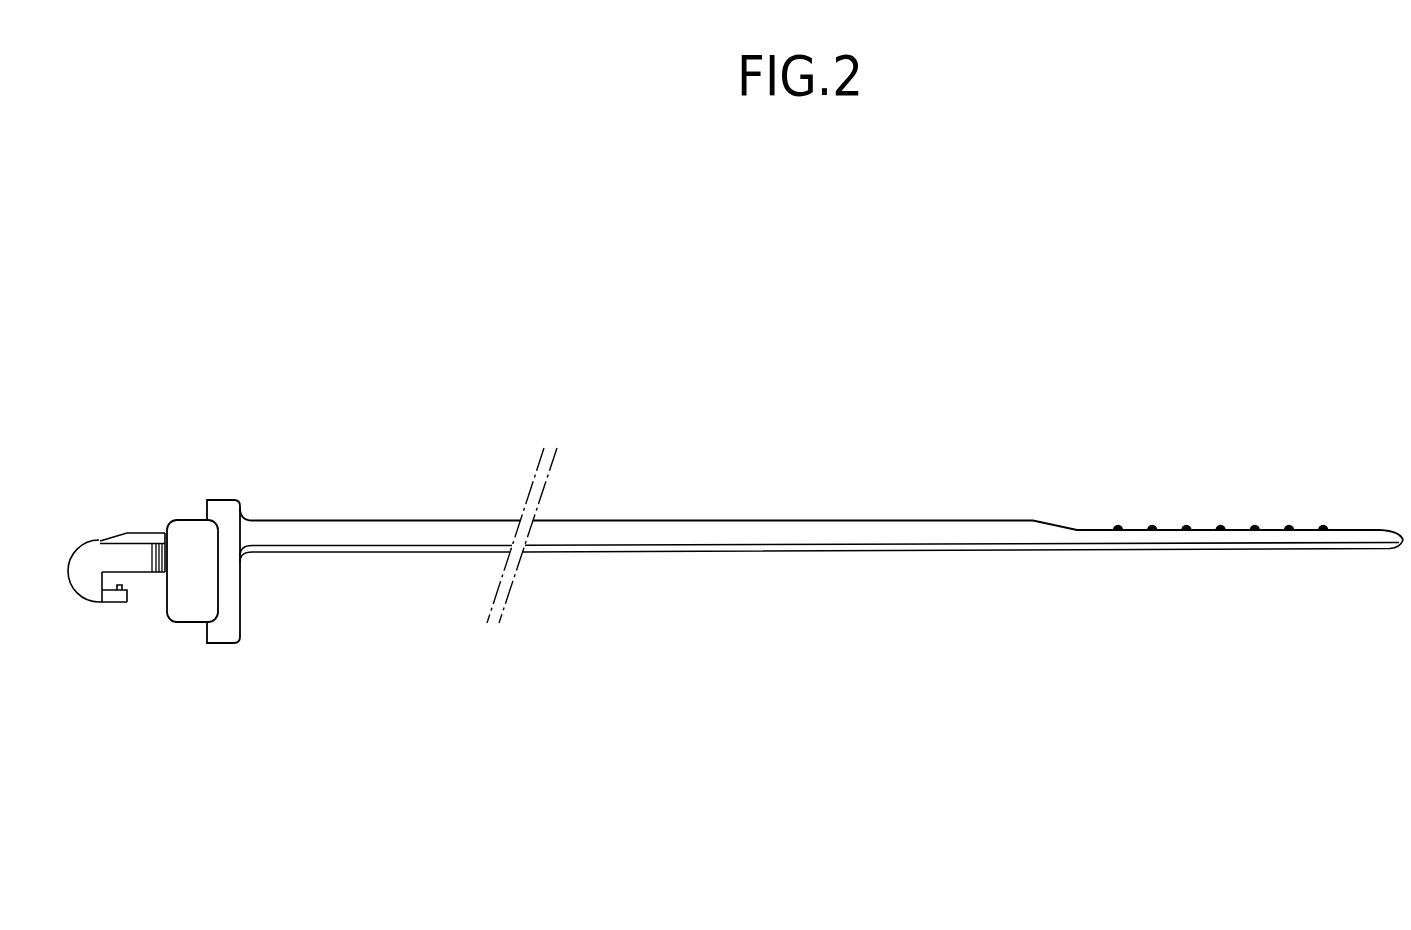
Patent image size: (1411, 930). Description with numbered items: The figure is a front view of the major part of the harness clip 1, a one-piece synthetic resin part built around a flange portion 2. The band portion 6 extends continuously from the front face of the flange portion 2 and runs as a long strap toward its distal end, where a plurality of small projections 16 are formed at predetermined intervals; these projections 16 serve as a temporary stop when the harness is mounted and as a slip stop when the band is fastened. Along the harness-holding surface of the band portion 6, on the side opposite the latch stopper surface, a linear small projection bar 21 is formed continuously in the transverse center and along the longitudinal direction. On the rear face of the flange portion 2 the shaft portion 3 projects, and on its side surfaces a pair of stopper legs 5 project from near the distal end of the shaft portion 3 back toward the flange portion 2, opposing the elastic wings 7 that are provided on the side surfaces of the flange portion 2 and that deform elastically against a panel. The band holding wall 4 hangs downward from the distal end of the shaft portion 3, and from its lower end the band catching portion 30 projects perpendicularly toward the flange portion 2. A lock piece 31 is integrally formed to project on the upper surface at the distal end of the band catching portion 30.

The harness clip 1 is at (423, 477).
The flange portion 2 is at (230, 502).
The shaft portion 3 is at (137, 532).
The band holding wall 4 is at (90, 596).
The stopper legs 5 is at (113, 555).
The band portion 6 is at (887, 520).
The elastic wings 7 is at (190, 523).
The small projections 16 is at (1222, 530).
The small projection bar 21 is at (604, 551).
The band catching portion 30 is at (107, 604).
The lock piece 31 is at (123, 588).